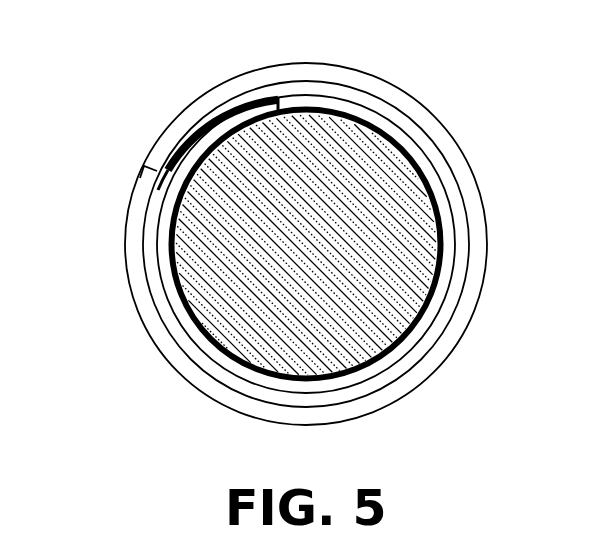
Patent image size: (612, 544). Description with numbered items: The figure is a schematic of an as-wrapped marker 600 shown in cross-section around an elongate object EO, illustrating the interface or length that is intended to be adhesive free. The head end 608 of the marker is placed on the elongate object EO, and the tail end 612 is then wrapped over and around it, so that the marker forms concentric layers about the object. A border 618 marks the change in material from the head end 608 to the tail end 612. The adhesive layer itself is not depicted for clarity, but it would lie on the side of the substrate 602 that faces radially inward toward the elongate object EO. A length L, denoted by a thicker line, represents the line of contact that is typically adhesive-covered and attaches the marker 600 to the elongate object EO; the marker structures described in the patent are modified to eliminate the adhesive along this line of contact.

The as-wrapped marker 600 is at (470, 80).
The substrate 602 is at (130, 241).
The tail end 612 is at (140, 178).
The border 618 is at (356, 87).
The head end 608 is at (296, 99).
The elongate object EO is at (230, 140).
The length L is at (437, 187).